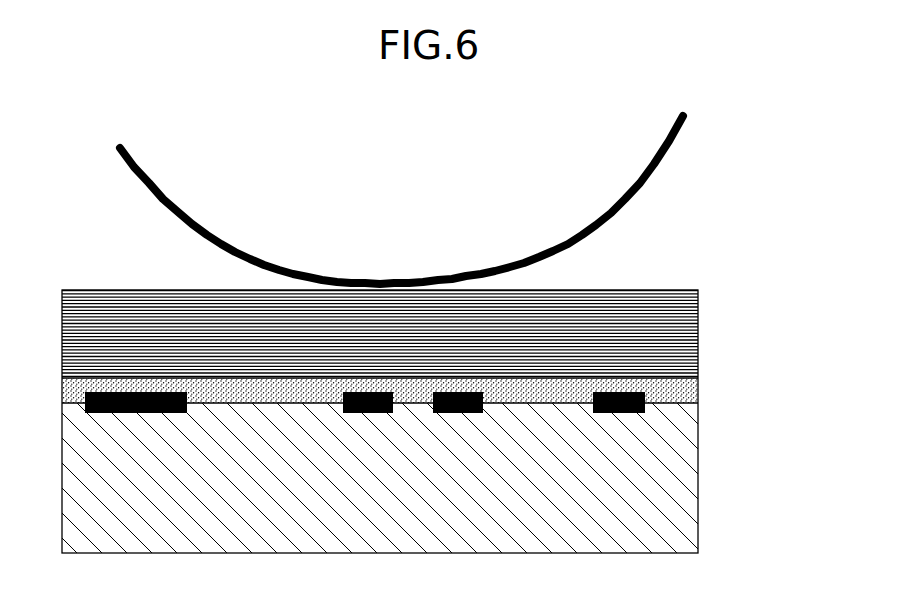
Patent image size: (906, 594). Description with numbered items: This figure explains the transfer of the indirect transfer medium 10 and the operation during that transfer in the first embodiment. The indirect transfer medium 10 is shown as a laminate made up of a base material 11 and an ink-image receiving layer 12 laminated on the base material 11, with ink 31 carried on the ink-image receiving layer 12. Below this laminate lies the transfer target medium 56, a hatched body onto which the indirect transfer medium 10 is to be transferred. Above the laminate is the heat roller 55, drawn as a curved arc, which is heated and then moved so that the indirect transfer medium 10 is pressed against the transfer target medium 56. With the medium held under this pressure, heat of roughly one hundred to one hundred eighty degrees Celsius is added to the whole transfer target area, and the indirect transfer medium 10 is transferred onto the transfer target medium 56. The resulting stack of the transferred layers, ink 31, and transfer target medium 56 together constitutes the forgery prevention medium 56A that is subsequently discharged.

The heat roller 55 is at (663, 170).
The indirect transfer medium 10 is at (384, 346).
The base material 11 is at (688, 323).
The ink-image receiving layer 12 is at (690, 388).
The ink 31 is at (418, 415).
The transfer target medium 56 is at (688, 496).
The forgery prevention medium 56A is at (413, 422).